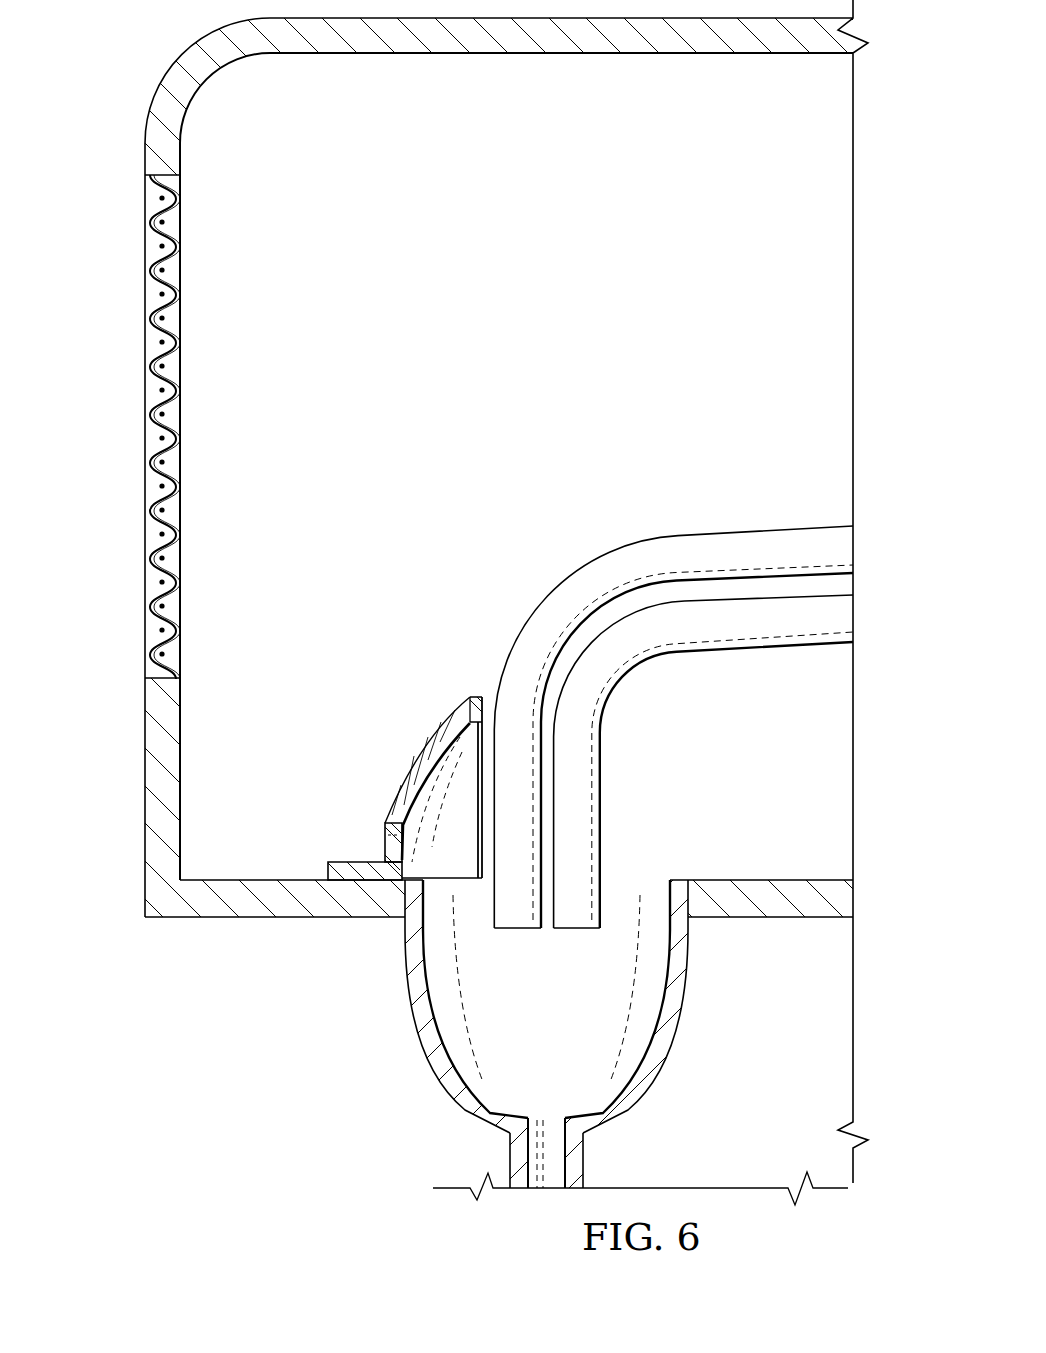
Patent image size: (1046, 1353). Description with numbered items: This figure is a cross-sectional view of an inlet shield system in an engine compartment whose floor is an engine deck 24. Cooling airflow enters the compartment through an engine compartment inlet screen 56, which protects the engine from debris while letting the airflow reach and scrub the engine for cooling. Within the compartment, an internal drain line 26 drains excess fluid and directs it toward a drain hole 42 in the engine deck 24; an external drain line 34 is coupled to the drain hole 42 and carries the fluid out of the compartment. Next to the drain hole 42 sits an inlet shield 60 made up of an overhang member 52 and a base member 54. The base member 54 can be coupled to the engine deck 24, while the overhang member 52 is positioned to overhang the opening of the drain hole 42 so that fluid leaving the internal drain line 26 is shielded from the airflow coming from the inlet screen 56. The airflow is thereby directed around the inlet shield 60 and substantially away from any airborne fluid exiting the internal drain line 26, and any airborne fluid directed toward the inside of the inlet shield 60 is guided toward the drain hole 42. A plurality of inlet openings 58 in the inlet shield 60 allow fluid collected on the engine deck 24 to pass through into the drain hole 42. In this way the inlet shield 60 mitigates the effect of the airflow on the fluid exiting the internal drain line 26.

The engine deck 24 is at (229, 878).
The internal drain line 26 is at (805, 537).
The external drain line 34 is at (518, 1143).
The drain hole 42 is at (632, 1002).
The overhang member 52 is at (440, 730).
The base member 54 is at (350, 866).
The engine compartment inlet screen 56 is at (126, 429).
The inlet openings 58 is at (374, 839).
The inlet shield 60 is at (383, 745).